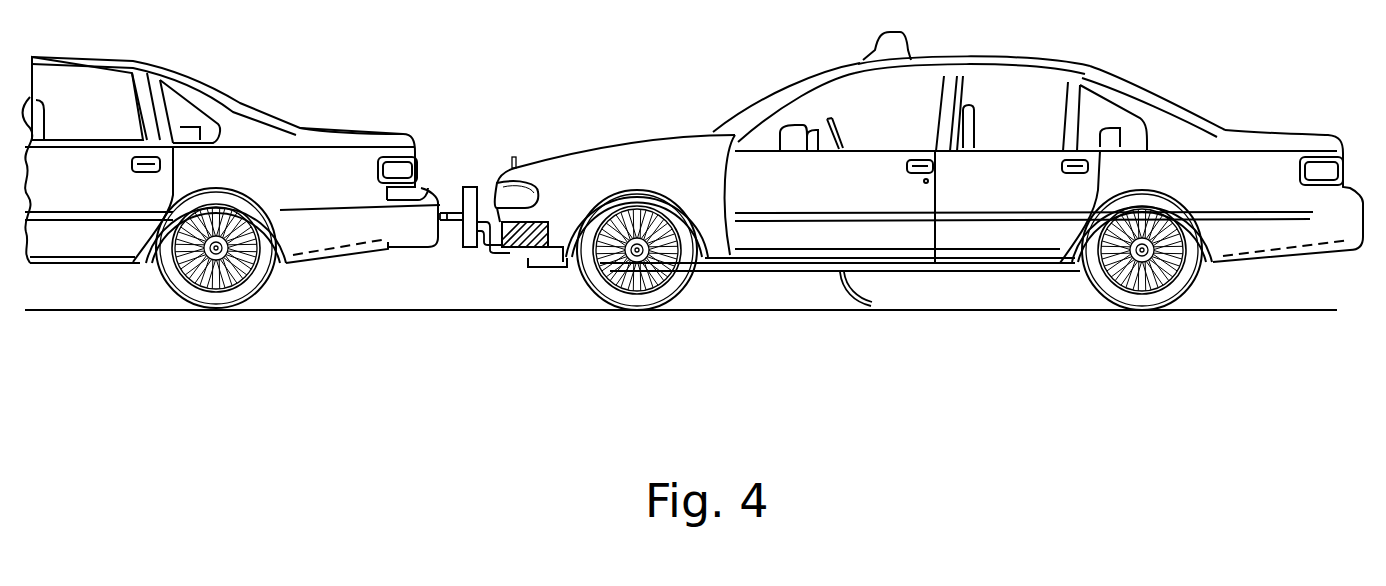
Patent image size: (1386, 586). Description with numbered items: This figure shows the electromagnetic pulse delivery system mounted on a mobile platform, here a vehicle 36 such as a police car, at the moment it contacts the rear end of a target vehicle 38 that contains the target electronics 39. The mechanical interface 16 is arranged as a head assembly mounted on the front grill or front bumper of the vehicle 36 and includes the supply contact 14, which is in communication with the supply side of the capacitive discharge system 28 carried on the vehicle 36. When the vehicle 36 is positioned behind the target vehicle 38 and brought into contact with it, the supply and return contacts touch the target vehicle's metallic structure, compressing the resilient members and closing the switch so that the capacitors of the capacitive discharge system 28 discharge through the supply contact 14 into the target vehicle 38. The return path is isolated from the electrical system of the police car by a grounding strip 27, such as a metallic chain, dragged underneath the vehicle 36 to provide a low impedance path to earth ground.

The supply contact 14 is at (457, 227).
The mechanical interface 16 is at (470, 185).
The grounding strip 27 is at (841, 295).
The capacitive discharge system 28 is at (518, 250).
The vehicle 36 is at (1183, 97).
The target vehicle 38 is at (270, 108).
The target electronics 39 is at (343, 170).